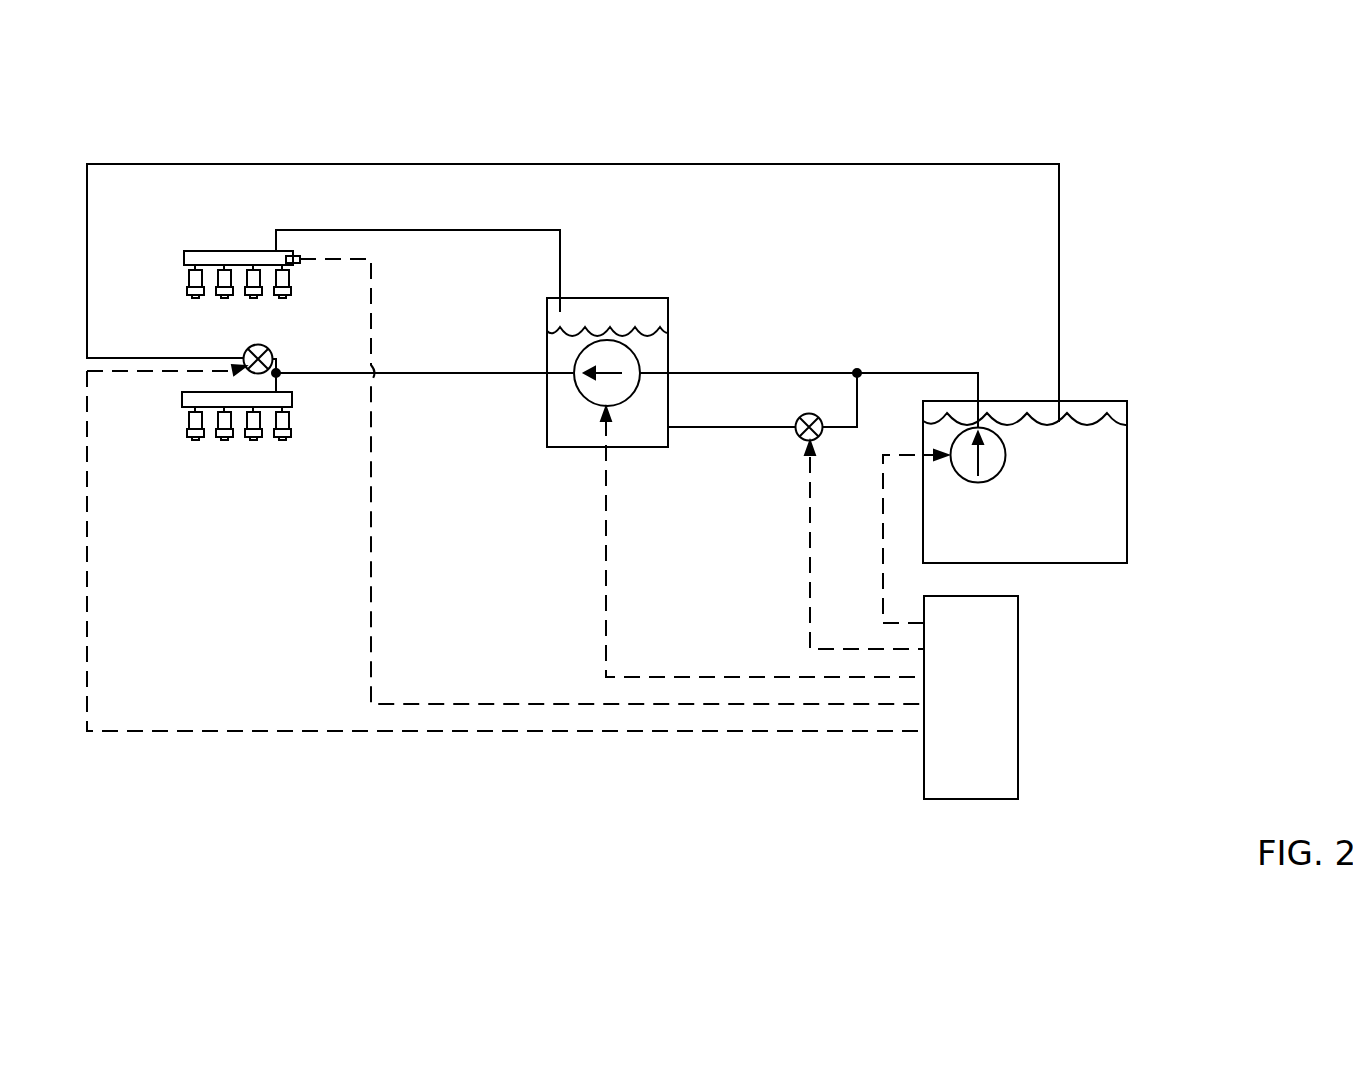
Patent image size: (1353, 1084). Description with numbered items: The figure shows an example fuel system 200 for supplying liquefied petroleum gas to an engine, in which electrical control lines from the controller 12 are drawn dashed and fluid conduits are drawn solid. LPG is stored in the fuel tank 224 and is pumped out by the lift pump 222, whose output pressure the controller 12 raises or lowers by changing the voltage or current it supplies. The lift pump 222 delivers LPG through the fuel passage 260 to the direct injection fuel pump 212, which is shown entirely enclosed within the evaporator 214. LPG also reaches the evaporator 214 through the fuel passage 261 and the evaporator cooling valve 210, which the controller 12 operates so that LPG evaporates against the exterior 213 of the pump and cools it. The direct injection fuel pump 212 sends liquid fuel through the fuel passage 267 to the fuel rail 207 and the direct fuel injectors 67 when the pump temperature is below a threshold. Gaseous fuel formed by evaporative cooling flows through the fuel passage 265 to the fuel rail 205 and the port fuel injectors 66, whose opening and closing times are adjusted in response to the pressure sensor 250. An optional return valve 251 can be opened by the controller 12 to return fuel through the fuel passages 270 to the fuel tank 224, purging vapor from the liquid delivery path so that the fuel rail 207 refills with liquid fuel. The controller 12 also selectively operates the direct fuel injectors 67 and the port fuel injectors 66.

The fuel system 200 is at (1188, 68).
The controller 12 is at (552, 585).
The port fuel rail 205 is at (184, 250).
The fuel rail 207 is at (183, 393).
The port fuel injectors 66 is at (195, 298).
The direct fuel injectors 67 is at (195, 440).
The pressure sensor 250 is at (300, 258).
The return valve 251 is at (271, 352).
The fuel passages 270 is at (93, 357).
The fuel passage or conduit 265 is at (413, 230).
The fuel passage 267 is at (403, 372).
The evaporator 214 is at (668, 320).
The exterior 213 is at (600, 407).
The direct injection fuel pump 212 is at (611, 392).
The fuel passage 261 is at (713, 426).
The evaporator cooling valve 210 is at (812, 441).
The fuel passage or conduit 260 is at (795, 372).
The lift pump 222 is at (1000, 468).
The fuel tank 224 is at (1127, 483).